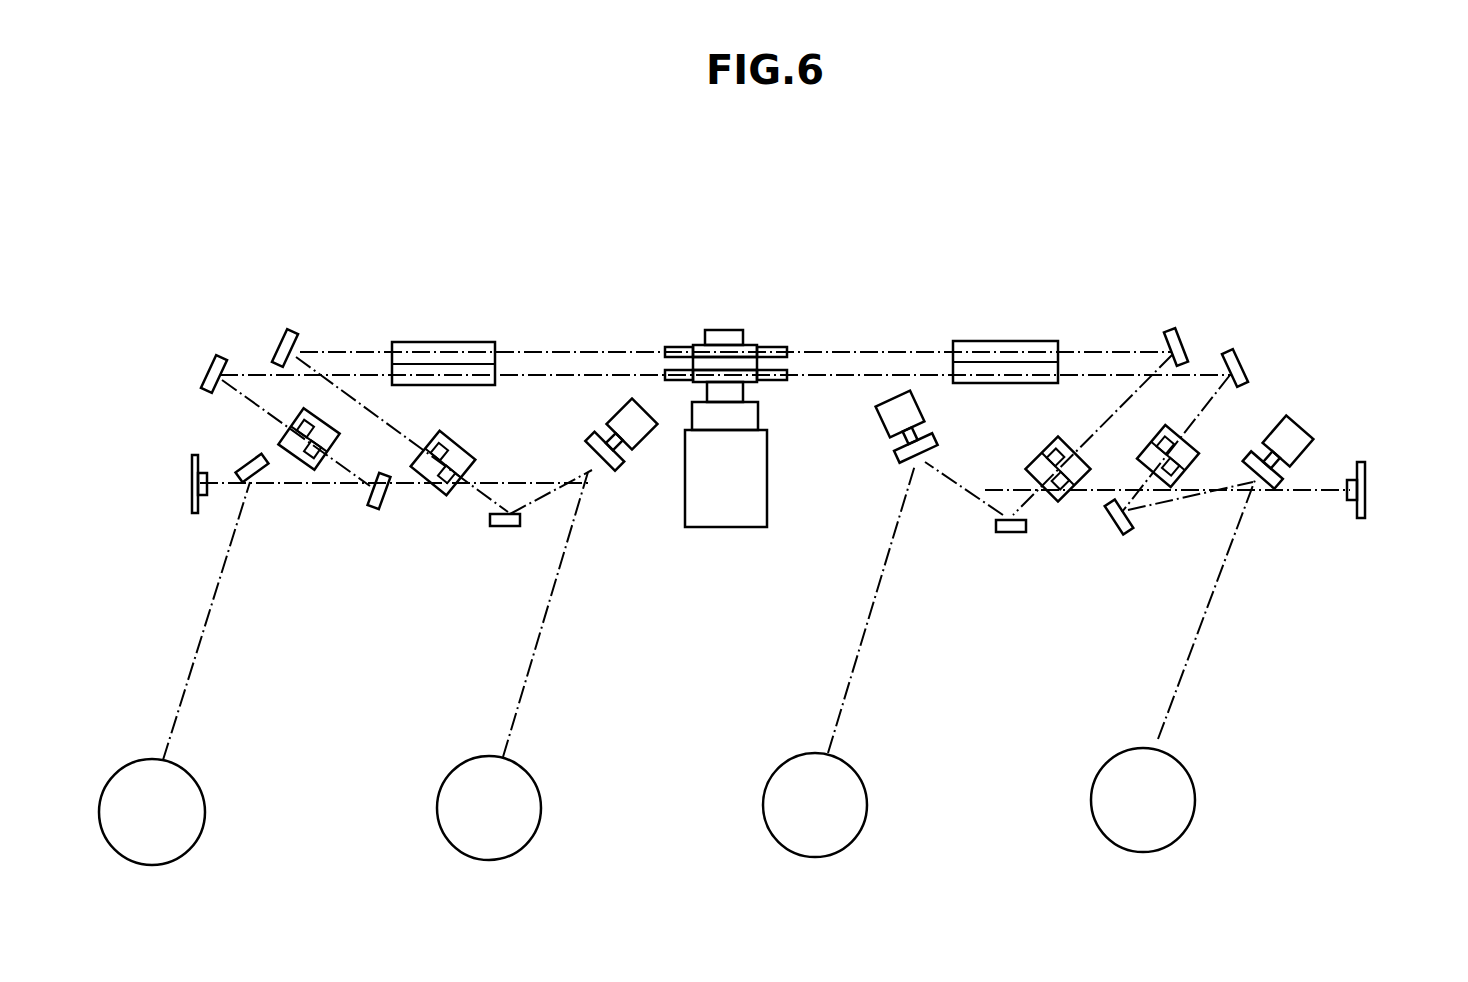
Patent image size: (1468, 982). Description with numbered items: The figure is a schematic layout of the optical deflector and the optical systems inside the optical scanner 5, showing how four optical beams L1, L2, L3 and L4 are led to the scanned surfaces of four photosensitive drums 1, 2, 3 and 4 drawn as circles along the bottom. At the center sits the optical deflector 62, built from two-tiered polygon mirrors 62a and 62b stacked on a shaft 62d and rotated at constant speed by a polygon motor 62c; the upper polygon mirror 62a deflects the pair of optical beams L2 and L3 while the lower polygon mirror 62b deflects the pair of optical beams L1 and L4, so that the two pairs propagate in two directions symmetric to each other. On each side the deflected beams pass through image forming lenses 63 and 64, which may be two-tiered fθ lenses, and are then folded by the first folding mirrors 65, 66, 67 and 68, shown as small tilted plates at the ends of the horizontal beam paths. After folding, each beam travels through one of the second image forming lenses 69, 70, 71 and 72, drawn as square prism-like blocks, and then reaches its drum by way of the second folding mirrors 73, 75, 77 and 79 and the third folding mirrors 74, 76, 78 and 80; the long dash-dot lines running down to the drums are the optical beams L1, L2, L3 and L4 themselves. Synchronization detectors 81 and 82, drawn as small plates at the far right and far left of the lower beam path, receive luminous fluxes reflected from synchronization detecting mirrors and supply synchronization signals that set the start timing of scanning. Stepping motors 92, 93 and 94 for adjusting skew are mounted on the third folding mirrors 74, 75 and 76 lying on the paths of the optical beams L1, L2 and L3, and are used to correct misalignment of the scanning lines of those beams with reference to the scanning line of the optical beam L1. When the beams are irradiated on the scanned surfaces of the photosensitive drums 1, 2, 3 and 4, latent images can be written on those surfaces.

The photosensitive drum 1 is at (1193, 777).
The photosensitive drum 2 is at (866, 780).
The photosensitive drum 3 is at (540, 783).
The photosensitive drum 4 is at (203, 786).
The optical scanner 5 is at (1087, 258).
The optical deflector 62 is at (800, 306).
The polygon mirror 62a is at (678, 347).
The polygon mirror 62b is at (775, 380).
The polygon motor 62c is at (730, 502).
The rotation shaft 62d is at (726, 338).
The image forming lens 63 is at (1004, 341).
The image forming lens 64 is at (446, 342).
The first folding mirror 65 is at (1172, 330).
The first folding mirror 66 is at (292, 330).
The first folding mirror 67 is at (1230, 352).
The first folding mirror 68 is at (216, 356).
The second image forming lens 69 is at (1148, 432).
The second image forming lens 70 is at (1042, 446).
The second image forming lens 71 is at (458, 443).
The second image forming lens 72 is at (322, 412).
The second folding mirror 73 is at (1126, 535).
The third folding mirror 74 is at (1268, 490).
The second folding mirror 75 is at (1011, 533).
The third folding mirror 76 is at (905, 462).
The second folding mirror 77 is at (505, 527).
The third folding mirror 78 is at (610, 475).
The second folding mirror 79 is at (377, 508).
The third folding mirror 80 is at (245, 462).
The synchronization detector 81 is at (1366, 490).
The synchronization detector 82 is at (192, 484).
The stepping motor 92 is at (1300, 422).
The stepping motor 93 is at (890, 395).
The stepping motor 94 is at (630, 400).
The optical beam L1 is at (1200, 644).
The optical beam L2 is at (873, 644).
The optical beam L3 is at (558, 600).
The optical beam L4 is at (225, 606).